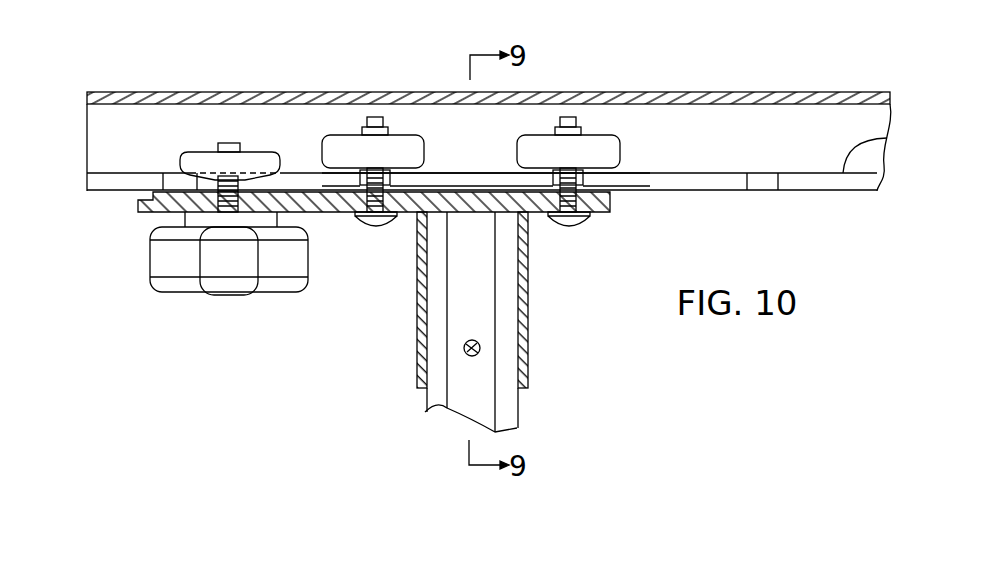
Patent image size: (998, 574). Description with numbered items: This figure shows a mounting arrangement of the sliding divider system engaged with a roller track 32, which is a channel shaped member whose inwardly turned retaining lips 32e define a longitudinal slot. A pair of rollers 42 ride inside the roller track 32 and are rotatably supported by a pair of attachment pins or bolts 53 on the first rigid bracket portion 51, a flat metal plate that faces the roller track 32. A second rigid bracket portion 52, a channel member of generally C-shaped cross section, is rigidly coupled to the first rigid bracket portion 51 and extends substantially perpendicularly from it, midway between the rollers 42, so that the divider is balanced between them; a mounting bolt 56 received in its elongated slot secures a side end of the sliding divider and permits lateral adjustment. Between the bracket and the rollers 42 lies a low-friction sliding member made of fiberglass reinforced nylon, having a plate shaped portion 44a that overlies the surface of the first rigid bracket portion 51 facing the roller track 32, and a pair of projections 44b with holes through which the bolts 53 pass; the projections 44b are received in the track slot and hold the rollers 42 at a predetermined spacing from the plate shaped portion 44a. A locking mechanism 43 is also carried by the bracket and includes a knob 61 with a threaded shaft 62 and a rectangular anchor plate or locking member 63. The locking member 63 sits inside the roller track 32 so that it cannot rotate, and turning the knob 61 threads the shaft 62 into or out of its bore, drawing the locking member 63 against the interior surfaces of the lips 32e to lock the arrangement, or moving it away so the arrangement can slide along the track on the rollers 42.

The roller track 32 is at (816, 84).
The retaining lips 32e is at (885, 142).
The rollers 42 is at (322, 158).
The locking mechanism 43 is at (184, 228).
The plate shaped portion 44a is at (425, 186).
The projections 44b is at (490, 192).
The first rigid bracket portion 51 is at (143, 213).
The second rigid bracket portion 52 is at (528, 302).
The attachment pins or bolts 53 is at (372, 227).
The mounting bolt 56 is at (465, 345).
The knob 61 is at (233, 297).
The threaded shaft 62 is at (226, 143).
The locking member 63 is at (180, 157).